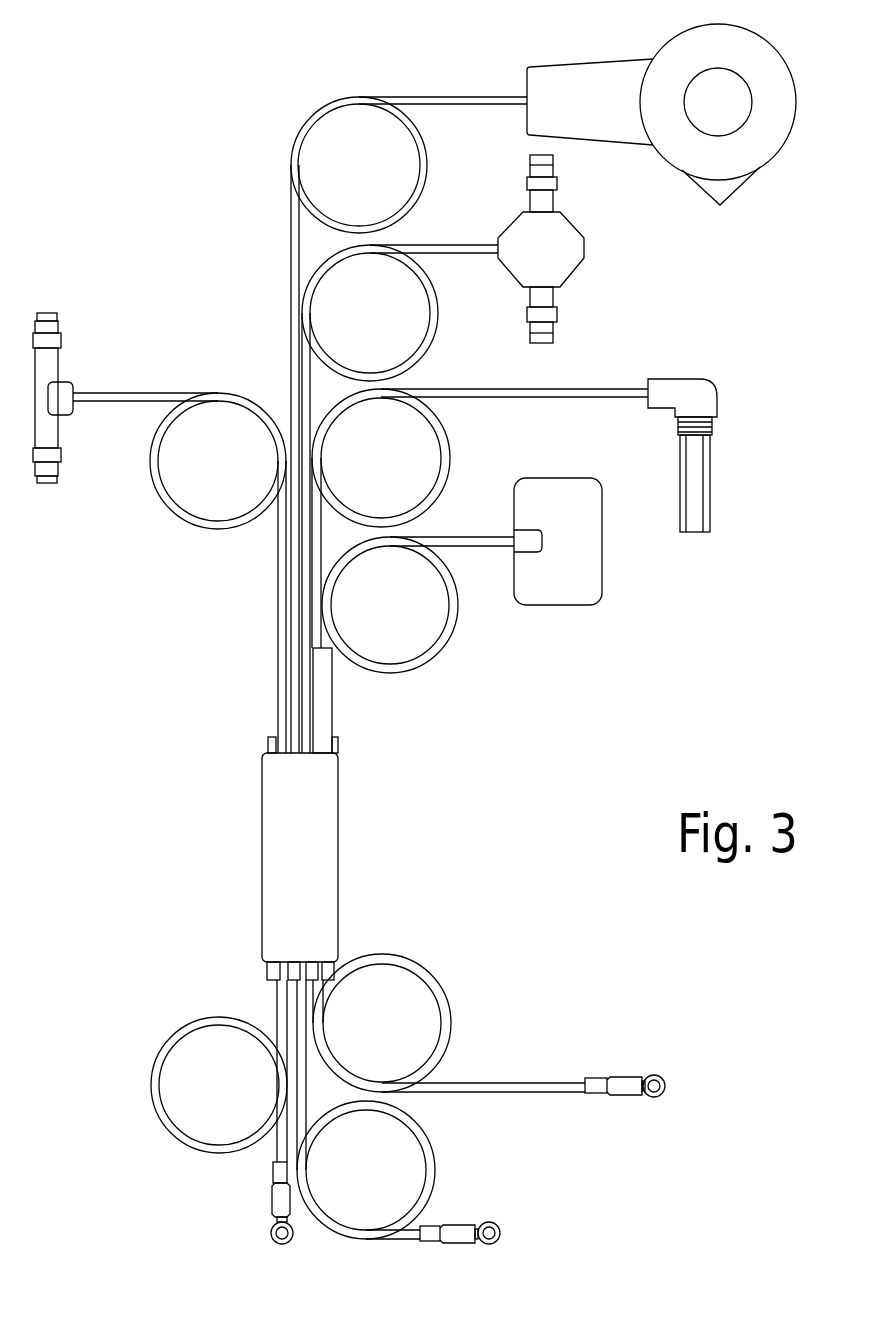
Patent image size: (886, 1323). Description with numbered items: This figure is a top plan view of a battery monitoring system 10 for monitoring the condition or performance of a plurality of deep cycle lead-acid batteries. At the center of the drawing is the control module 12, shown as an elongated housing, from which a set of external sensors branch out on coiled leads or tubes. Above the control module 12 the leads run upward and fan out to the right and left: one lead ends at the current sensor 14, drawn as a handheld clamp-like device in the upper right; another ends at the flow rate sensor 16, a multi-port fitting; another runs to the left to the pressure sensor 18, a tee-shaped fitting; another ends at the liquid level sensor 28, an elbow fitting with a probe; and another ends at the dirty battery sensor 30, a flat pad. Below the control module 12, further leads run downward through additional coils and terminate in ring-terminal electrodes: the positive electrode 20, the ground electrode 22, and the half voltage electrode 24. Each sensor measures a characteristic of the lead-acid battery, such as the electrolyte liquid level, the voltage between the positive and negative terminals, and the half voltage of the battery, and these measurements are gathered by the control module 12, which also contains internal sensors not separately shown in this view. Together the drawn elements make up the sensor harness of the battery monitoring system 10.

The battery monitoring system 10 is at (180, 152).
The control module 12 is at (338, 868).
The current sensor 14 is at (777, 152).
The flow rate sensor 16 is at (572, 273).
The pressure sensor 18 is at (57, 432).
The positive electrode 20 is at (500, 1230).
The ground electrode 22 is at (667, 1083).
The half voltage electrode 24 is at (270, 1240).
The liquid level sensor 28 is at (702, 382).
The dirty battery sensor 30 is at (602, 572).